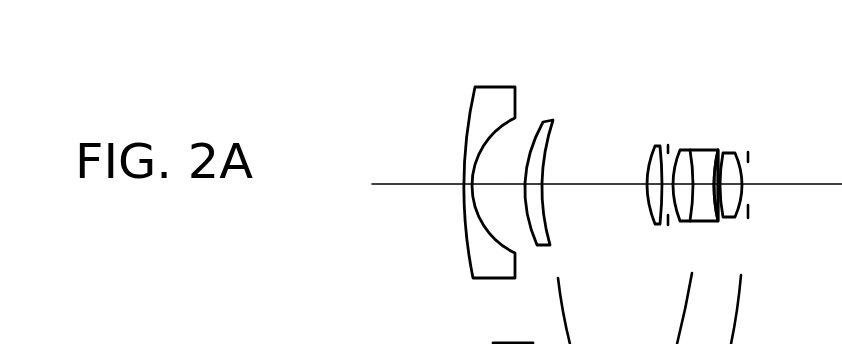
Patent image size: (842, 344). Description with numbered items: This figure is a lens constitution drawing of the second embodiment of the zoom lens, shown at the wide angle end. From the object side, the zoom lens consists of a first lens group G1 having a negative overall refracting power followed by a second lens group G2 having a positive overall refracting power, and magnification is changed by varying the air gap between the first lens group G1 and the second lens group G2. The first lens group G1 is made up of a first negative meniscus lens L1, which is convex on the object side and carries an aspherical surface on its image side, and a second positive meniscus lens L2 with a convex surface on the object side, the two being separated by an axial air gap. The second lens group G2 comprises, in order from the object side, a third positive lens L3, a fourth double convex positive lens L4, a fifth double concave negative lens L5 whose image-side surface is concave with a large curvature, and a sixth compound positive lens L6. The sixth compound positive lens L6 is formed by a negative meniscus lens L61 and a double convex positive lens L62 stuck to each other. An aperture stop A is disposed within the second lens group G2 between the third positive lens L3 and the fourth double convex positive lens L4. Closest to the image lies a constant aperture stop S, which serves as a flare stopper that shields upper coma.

The first lens group G1 is at (588, 36).
The second lens group G2 is at (775, 58).
The first negative meniscus lens L1 is at (498, 100).
The second positive meniscus lens L2 is at (550, 118).
The third positive lens L3 is at (650, 144).
The fourth double convex positive lens L4 is at (690, 148).
The fifth double concave negative lens L5 is at (706, 153).
The sixth compound positive lens L6 is at (741, 152).
The negative meniscus lens L61 is at (722, 218).
The double convex positive lens L62 is at (738, 193).
The aperture stop A is at (668, 144).
The constant aperture stop S is at (749, 152).